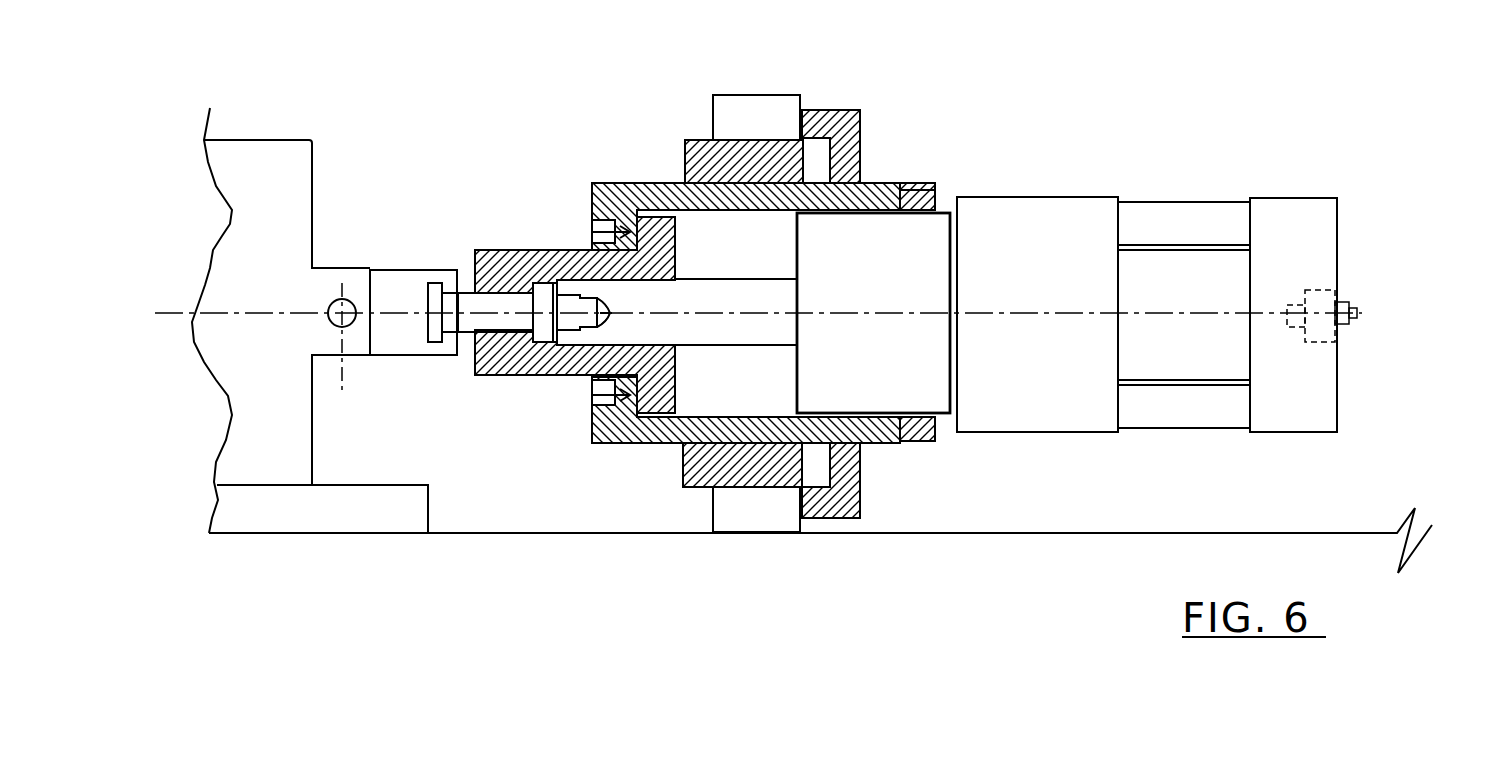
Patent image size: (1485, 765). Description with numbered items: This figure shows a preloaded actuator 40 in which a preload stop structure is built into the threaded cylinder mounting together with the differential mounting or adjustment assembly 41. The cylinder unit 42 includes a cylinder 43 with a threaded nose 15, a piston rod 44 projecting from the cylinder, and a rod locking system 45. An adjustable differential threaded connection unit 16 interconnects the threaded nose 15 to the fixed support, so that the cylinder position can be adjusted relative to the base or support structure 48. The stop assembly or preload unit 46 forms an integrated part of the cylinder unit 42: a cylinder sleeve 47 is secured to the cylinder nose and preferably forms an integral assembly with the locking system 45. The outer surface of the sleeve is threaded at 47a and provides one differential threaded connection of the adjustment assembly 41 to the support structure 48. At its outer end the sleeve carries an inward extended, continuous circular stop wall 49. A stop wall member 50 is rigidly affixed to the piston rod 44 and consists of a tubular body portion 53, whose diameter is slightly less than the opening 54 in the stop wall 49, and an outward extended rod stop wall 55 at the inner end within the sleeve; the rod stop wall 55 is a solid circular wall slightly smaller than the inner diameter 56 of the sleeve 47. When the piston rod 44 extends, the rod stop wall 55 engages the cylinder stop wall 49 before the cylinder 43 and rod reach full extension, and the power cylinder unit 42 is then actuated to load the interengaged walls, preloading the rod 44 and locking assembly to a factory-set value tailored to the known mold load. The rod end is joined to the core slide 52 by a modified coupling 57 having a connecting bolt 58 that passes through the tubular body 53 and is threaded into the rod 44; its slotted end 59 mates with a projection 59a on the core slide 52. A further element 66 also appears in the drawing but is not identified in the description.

The actuator 40 is at (703, 38).
The differential mounting or adjustment assembly 41 is at (680, 445).
The cylinder unit 42 is at (1070, 303).
The cylinder 43 is at (1178, 270).
The piston rod 44 is at (762, 332).
The rod locking system 45 is at (900, 305).
The stop assembly or preload unit 46 is at (558, 378).
The cylinder sleeve 47 is at (648, 183).
The threaded outer surface 47a is at (676, 183).
The base or support structure 48 is at (728, 95).
The stop wall 49 is at (597, 447).
The stop wall member 50 is at (560, 250).
The core slide 52 is at (291, 294).
The tubular body portion 53 is at (520, 378).
The opening 54 is at (590, 232).
The rod stop wall 55 is at (677, 395).
The inner diameter 56 is at (695, 212).
The coupling 57 is at (408, 270).
The connecting bolt 58 is at (507, 305).
The slotted end 59 is at (452, 333).
The mating projection 59a is at (415, 342).
The spacer ring 66 is at (908, 182).
The threaded nose 15 is at (930, 342).
The adjustable differential threaded connection unit 16 is at (703, 487).